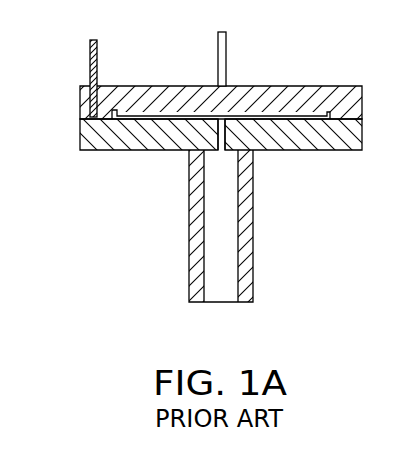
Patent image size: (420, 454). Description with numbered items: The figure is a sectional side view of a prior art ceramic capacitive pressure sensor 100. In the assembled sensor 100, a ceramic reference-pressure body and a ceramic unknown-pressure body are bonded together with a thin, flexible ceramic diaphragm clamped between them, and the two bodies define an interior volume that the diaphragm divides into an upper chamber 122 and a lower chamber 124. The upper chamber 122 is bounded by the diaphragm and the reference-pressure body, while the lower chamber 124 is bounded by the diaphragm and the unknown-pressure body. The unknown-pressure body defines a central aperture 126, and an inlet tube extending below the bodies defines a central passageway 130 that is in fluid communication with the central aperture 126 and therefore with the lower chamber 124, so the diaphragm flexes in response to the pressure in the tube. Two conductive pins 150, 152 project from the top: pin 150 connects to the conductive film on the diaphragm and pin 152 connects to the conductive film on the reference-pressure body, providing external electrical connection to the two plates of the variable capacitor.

The ceramic capacitive pressure sensor 100 is at (95, 191).
The upper chamber 122 is at (328, 112).
The lower chamber 124 is at (228, 130).
The central aperture 126 is at (221, 151).
The central passageway 130 is at (217, 288).
The conductive pin 150 is at (89, 54).
The conductive pin 152 is at (217, 52).